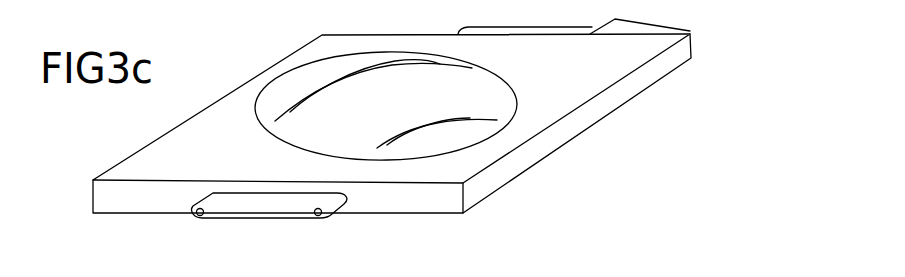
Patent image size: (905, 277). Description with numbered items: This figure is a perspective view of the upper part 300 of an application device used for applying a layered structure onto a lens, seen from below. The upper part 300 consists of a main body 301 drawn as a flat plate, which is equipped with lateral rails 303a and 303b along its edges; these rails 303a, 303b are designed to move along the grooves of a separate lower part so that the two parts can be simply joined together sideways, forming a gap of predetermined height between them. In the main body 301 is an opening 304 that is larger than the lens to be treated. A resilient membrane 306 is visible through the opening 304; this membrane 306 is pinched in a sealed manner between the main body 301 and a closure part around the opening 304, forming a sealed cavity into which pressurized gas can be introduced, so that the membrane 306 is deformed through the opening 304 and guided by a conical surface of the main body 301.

The upper part 300 is at (440, 139).
The main body 301 is at (632, 86).
The lateral rail 303a is at (690, 31).
The lateral rail 303b is at (293, 208).
The opening 304 is at (352, 147).
The resilient membrane 306 is at (290, 83).